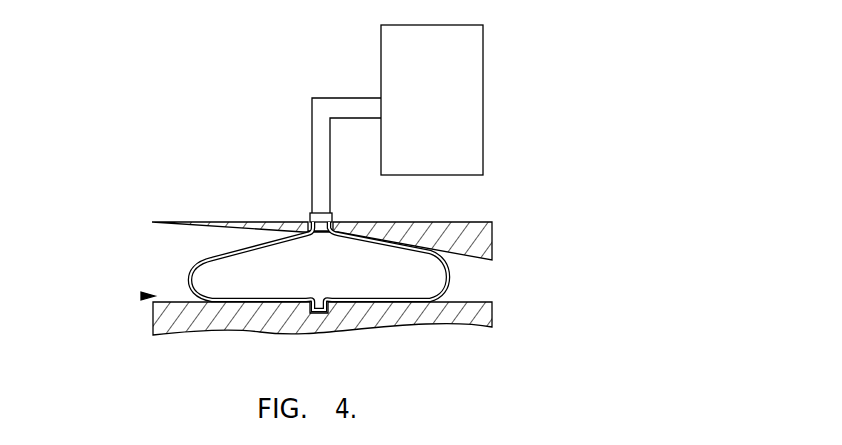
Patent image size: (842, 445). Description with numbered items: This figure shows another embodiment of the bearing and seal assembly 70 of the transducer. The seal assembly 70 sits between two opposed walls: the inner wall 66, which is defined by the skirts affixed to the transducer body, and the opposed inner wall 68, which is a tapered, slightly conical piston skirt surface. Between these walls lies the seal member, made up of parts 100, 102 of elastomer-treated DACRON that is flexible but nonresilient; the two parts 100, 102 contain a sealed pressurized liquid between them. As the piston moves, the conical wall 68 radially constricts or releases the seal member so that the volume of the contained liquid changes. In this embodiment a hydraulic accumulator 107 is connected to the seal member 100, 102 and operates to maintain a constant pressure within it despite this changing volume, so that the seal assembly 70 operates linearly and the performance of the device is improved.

The hydraulic accumulator 107 is at (398, 85).
The inner wall 68 is at (167, 262).
The inner wall 66 is at (490, 302).
The seal member part 102 is at (450, 275).
The seal member part 100 is at (191, 281).
The bearing and seal assembly 70 is at (148, 297).